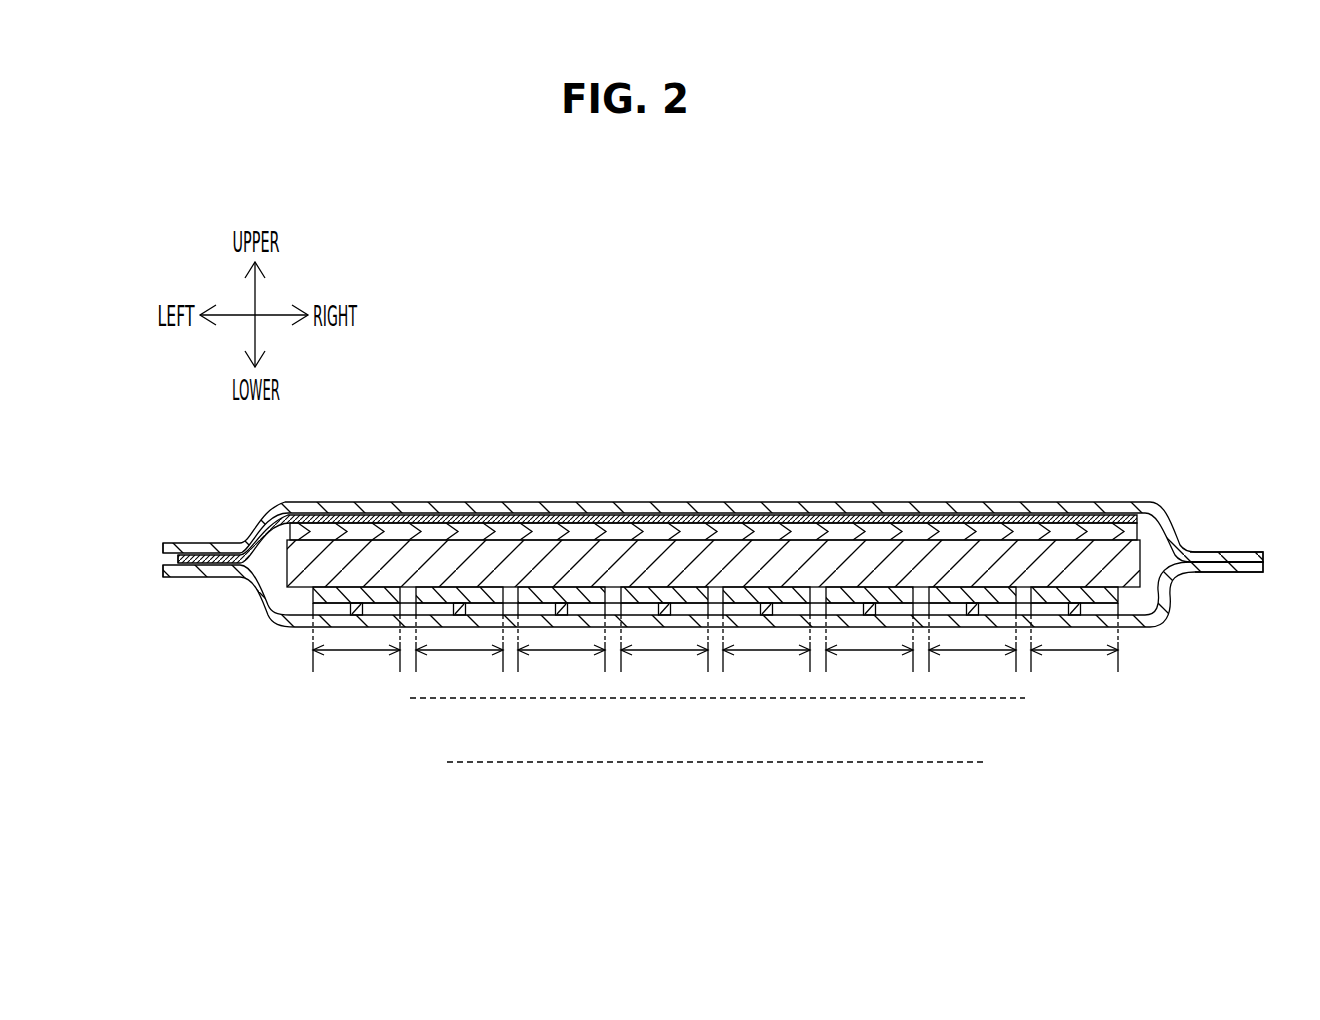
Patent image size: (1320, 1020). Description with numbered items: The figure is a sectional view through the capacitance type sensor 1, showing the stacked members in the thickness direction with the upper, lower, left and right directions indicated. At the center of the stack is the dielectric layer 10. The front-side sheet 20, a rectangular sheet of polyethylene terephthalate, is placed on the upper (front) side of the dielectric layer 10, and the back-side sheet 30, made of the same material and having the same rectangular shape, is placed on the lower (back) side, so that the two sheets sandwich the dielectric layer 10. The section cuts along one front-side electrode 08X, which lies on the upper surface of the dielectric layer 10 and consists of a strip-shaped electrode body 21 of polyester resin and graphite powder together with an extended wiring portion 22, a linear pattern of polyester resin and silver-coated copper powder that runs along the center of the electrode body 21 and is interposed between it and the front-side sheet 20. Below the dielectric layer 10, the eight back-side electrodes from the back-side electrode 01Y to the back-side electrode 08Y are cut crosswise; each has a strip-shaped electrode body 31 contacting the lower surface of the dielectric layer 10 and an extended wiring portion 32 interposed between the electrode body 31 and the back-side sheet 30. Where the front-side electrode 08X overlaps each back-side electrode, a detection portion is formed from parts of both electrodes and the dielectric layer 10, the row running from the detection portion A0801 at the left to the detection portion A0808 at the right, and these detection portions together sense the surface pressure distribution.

The capacitance type sensor 1 is at (1155, 372).
The dielectric layer 10 is at (907, 553).
The front-side sheet 20 is at (1202, 572).
The back-side sheet 30 is at (1200, 553).
The electrode body 21 is at (737, 535).
The extended wiring portion 22 is at (710, 517).
The electrode body 31 is at (353, 609).
The extended wiring portion 32 is at (322, 598).
The front-side electrode 08X is at (657, 480).
The back-side electrode 01Y is at (365, 733).
The back-side electrode 08Y is at (1157, 608).
The detection portion A0801 is at (357, 645).
The detection portion A0808 is at (1072, 645).